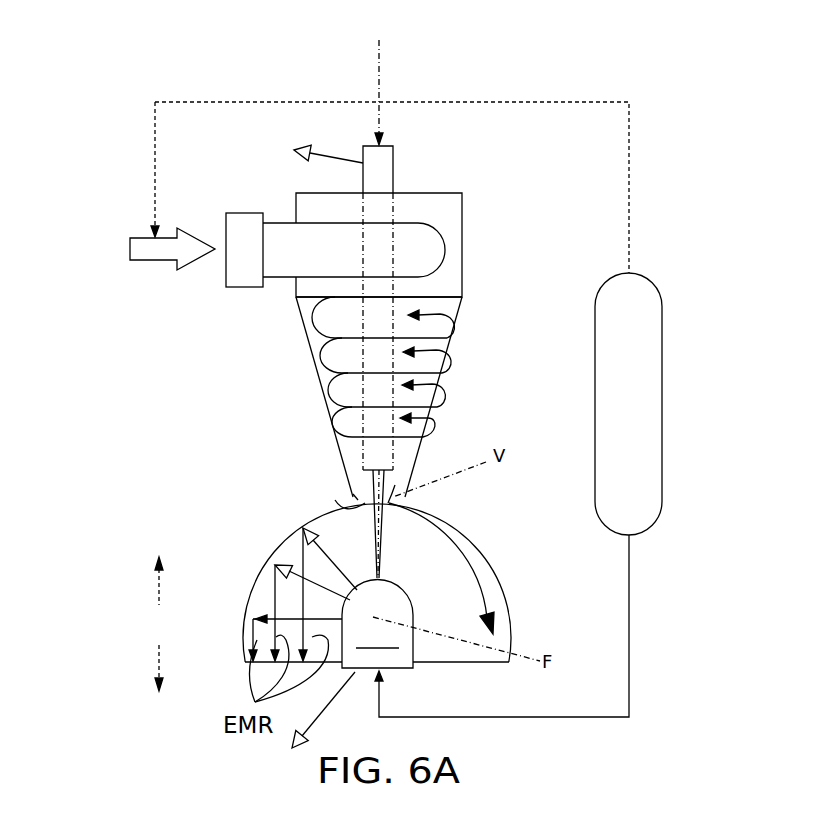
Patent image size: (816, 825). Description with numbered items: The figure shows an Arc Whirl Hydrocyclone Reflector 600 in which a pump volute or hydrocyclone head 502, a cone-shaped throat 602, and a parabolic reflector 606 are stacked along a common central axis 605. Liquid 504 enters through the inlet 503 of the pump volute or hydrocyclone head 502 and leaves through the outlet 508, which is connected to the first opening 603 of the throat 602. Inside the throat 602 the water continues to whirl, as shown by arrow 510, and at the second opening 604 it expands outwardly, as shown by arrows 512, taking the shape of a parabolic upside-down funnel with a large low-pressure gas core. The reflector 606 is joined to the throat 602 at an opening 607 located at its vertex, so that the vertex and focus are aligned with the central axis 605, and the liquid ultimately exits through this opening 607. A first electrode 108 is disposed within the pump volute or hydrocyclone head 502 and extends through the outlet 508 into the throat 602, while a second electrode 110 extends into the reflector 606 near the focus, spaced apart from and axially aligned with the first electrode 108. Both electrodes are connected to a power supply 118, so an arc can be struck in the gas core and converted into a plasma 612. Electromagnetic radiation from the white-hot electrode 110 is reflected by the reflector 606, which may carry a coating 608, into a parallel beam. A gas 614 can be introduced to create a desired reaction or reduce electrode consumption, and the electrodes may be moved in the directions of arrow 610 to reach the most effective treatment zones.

The Arc Whirl Hydrocyclone Reflector 600 is at (636, 60).
The central axis 605 is at (384, 65).
The first electrode 108 is at (395, 165).
The power supply 118 is at (237, 451).
The inlet 503 is at (224, 237).
The pump volute or hydrocyclone head 502 is at (372, 262).
The liquid 504 is at (128, 249).
The first opening 603 is at (297, 291).
The throat 602 is at (318, 366).
The outlet 508 is at (462, 310).
The whirl arrow 510 is at (452, 344).
The opening at the vertex 607 is at (353, 494).
The second opening 604 is at (333, 505).
The parabolic reflector 606 is at (342, 513).
The plasma 612 is at (402, 502).
The expansion arrows 512 is at (470, 558).
The second electrode 110 is at (377, 624).
The coating 608 is at (277, 560).
The electrode movement arrow 610 is at (156, 624).
The gas 614 is at (663, 362).